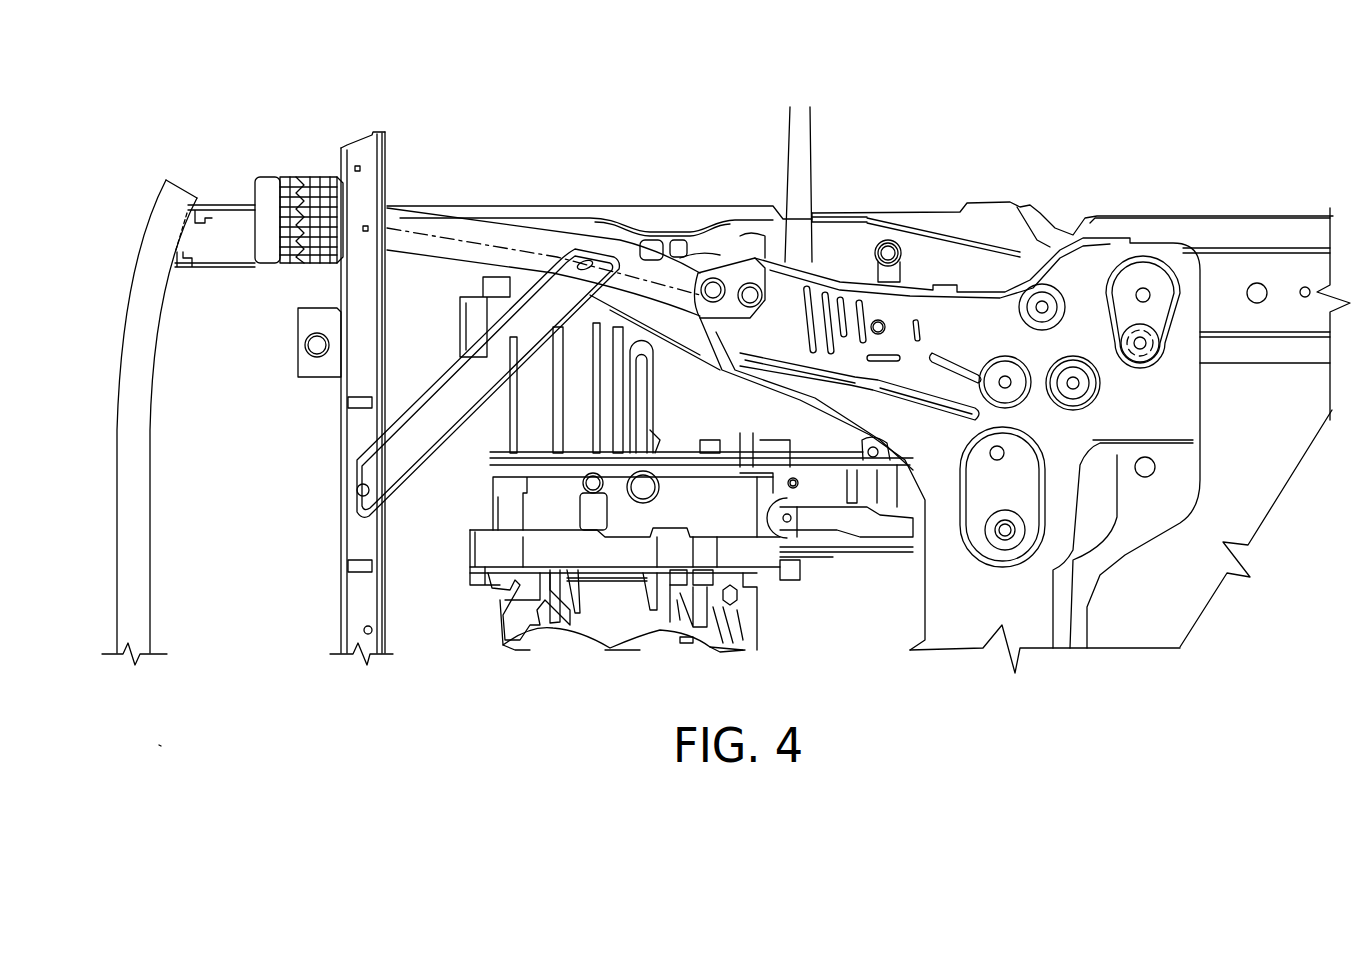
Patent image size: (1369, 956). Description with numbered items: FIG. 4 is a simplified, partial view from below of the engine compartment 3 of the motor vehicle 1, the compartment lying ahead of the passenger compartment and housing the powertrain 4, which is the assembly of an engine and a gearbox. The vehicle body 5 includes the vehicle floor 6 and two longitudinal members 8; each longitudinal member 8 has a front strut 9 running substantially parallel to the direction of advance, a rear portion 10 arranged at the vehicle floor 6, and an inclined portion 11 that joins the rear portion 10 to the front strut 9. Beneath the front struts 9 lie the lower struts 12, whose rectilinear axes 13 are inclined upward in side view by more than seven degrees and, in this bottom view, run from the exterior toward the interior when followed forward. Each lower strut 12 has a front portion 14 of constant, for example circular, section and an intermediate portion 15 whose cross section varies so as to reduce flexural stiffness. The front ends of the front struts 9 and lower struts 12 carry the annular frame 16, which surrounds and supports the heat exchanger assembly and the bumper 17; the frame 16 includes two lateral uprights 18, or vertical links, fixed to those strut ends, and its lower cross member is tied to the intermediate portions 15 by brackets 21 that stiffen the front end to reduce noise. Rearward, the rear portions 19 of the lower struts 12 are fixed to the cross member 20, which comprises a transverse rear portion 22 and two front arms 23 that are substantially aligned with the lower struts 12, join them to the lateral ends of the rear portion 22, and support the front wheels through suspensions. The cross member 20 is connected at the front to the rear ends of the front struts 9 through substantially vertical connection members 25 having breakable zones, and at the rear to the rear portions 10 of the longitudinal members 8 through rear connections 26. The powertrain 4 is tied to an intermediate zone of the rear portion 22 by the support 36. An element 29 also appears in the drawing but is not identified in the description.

The motor vehicle 1 is at (1067, 140).
The engine compartment 3 is at (418, 623).
The powertrain 4 is at (693, 490).
The body 5 is at (1306, 230).
The vehicle floor 6 is at (1250, 502).
The longitudinal members 8 is at (1237, 245).
The front struts 9 is at (741, 243).
The rear portions 10 is at (1300, 292).
The inclined portions 11 is at (1020, 290).
The lower struts 12 is at (641, 242).
The rectilinear axes 13 is at (527, 240).
The front portion 14 is at (466, 220).
The intermediate portion 15 is at (555, 262).
The frame 16 is at (328, 470).
The bumper 17 is at (115, 417).
The lateral uprights 18 is at (365, 152).
The rear portions 19 is at (690, 243).
The cross member 20 is at (962, 283).
The brackets 21 is at (443, 390).
The transverse rear portion 22 is at (1087, 563).
The front arms 23 is at (783, 292).
The connection members 25 is at (897, 242).
The rear connections 26 is at (1150, 295).
The vertical member 29 is at (847, 245).
The support 36 is at (903, 555).